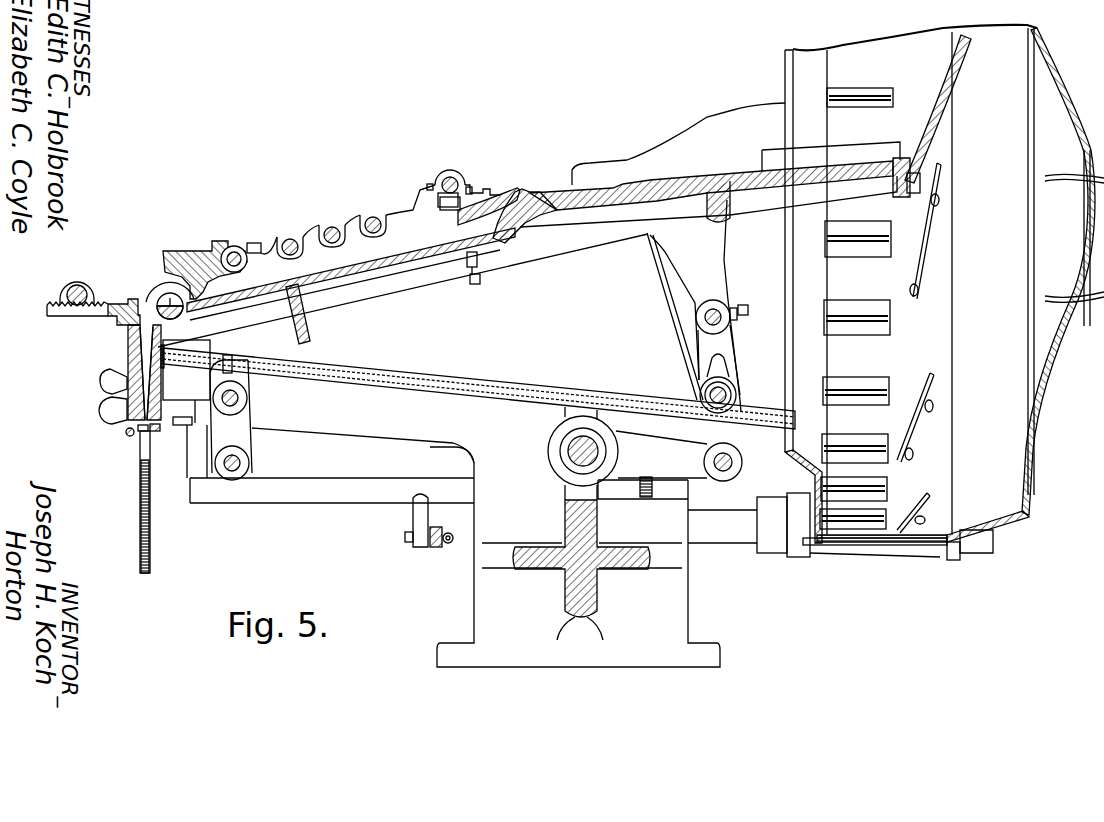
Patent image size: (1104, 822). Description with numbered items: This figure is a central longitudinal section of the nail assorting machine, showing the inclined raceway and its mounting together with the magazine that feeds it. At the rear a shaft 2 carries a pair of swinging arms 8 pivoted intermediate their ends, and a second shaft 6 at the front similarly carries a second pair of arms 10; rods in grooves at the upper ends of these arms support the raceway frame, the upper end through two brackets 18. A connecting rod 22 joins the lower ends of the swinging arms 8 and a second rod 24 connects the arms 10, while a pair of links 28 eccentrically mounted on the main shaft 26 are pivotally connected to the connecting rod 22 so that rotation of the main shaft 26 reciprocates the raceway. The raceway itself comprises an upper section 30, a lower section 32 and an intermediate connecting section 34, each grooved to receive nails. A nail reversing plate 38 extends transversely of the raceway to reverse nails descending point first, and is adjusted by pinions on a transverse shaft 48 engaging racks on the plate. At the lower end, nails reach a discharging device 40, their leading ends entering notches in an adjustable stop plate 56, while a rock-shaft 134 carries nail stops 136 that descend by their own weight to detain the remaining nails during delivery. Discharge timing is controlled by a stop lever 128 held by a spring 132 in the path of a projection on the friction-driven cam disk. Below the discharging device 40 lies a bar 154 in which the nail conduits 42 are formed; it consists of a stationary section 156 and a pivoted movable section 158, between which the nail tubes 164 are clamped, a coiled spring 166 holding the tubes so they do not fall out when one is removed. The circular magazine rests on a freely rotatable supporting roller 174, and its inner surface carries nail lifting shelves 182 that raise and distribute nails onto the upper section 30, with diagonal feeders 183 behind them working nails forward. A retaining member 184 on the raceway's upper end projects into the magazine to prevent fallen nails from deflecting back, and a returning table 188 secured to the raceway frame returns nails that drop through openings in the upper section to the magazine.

The shaft 2 is at (710, 392).
The second shaft 6 is at (250, 402).
The swinging arms 8 is at (727, 340).
The second pair of arms 10 is at (237, 365).
The brackets 18 is at (707, 253).
The connecting rod 22 is at (741, 466).
The second rod 24 is at (252, 467).
The main shaft 26 is at (563, 445).
The links 28 is at (662, 458).
The upper section of raceway 30 is at (680, 186).
The lower section of raceway 32 is at (258, 290).
The intermediate connecting section 34 is at (527, 228).
The nail reversing plate 38 is at (497, 193).
The discharging device 40 is at (157, 305).
The nail conduits 42 is at (143, 368).
The transverse shaft 48 is at (455, 170).
The stop plate 56 is at (107, 312).
The stop lever 128 is at (430, 545).
The spring 132 is at (448, 545).
The rock-shaft 134 is at (240, 252).
The nail stops 136 is at (190, 250).
The bar 154 is at (145, 357).
The stationary section 156 is at (155, 437).
The movable section 158 is at (126, 427).
The nail tubes 164 is at (140, 507).
The coiled spring 166 is at (129, 437).
The magazine supporting roller 174 is at (795, 540).
The nail lifting shelves 182 is at (880, 387).
The feeders 183 is at (920, 247).
The retaining member 184 is at (933, 110).
The returning table 188 is at (660, 410).